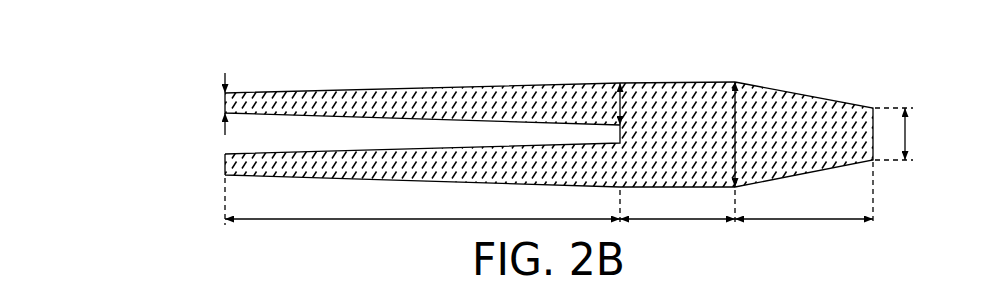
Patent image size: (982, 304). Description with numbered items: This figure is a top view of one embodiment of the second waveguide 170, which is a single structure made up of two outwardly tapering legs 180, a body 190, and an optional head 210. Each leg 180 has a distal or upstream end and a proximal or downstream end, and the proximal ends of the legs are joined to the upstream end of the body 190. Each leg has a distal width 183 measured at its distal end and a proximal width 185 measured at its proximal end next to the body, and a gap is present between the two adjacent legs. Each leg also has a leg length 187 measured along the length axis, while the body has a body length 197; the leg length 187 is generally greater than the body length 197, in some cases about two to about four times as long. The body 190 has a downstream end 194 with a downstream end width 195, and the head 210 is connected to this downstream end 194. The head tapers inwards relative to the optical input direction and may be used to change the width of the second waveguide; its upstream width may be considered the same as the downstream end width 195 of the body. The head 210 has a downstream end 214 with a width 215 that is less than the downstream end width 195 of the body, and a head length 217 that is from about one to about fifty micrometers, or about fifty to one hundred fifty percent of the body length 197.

The second waveguide 170 is at (154, 29).
The legs 180 is at (221, 102).
The distal width 183 is at (225, 91).
The proximal width 185 is at (640, 104).
The leg length 187 is at (422, 201).
The body 190 is at (661, 81).
The downstream end 194 is at (732, 185).
The downstream end width 195 is at (755, 134).
The body length 197 is at (677, 207).
The head 210 is at (806, 94).
The downstream end 214 is at (868, 158).
The width 215 is at (910, 134).
The length 217 is at (804, 193).